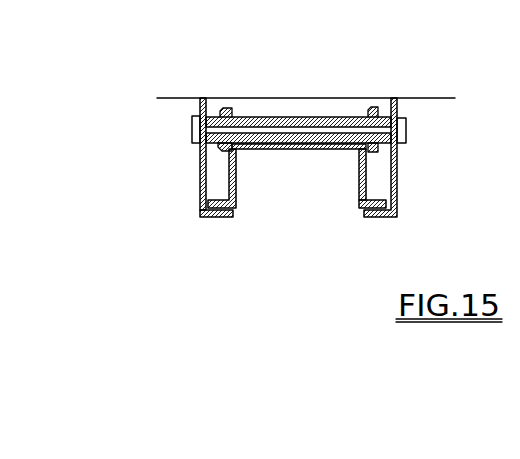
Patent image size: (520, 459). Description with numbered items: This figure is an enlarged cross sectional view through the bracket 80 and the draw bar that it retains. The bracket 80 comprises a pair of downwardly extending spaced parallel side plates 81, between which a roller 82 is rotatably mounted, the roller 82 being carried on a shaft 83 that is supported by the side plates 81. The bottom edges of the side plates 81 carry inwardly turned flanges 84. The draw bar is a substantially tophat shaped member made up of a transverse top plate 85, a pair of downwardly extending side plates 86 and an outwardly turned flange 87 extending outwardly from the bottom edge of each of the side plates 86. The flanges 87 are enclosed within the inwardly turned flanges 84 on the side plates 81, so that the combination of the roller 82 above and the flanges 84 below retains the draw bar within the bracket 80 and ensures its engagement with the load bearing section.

The bracket 80 is at (310, 95).
The side plates 81 is at (198, 168).
The roller 82 is at (347, 117).
The shaft 83 is at (380, 142).
The inwardly turned flanges 84 is at (218, 215).
The transverse top plate 85 is at (297, 152).
The side plates 86 is at (231, 177).
The outwardly turned flange 87 is at (368, 204).